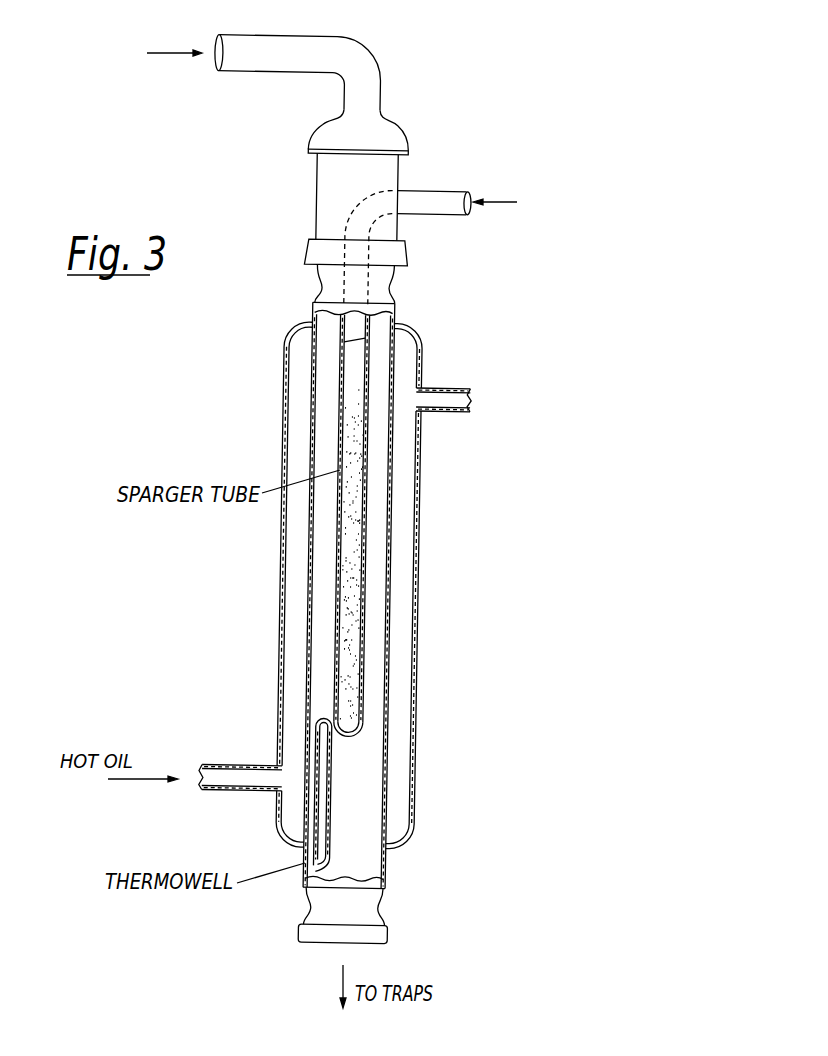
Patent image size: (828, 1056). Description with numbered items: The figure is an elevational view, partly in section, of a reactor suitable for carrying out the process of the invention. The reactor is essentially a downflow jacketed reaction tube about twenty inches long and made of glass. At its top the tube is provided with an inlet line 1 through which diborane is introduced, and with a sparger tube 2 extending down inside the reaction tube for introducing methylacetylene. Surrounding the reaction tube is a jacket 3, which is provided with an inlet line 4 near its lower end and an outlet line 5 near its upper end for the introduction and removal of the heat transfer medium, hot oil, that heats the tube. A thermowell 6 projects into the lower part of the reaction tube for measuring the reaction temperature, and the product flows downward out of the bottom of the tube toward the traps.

The inlet line 1 is at (277, 70).
The sparger tube 2 is at (380, 532).
The jacket 3 is at (402, 622).
The inlet line 4 is at (228, 767).
The outlet line 5 is at (441, 402).
The thermowell 6 is at (305, 850).